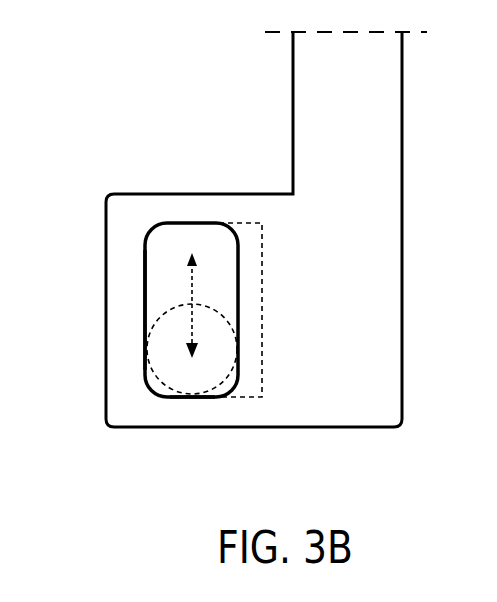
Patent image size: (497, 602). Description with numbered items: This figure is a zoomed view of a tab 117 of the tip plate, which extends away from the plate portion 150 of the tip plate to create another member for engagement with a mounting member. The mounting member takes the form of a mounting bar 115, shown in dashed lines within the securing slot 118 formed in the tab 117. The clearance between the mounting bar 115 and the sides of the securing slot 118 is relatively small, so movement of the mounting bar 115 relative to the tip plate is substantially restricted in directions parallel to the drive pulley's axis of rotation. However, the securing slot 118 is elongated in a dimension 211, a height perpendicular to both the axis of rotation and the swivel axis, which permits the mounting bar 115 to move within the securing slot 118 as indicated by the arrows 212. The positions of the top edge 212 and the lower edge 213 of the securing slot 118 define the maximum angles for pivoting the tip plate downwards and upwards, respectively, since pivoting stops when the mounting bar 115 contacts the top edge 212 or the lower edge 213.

The plate portion 150 is at (352, 100).
The tab 117 is at (127, 300).
The securing slot 118 is at (147, 313).
The mounting bar 115 is at (160, 392).
The top edge 212 is at (197, 224).
The dimension 211 is at (261, 321).
The lower edge 213 is at (207, 397).